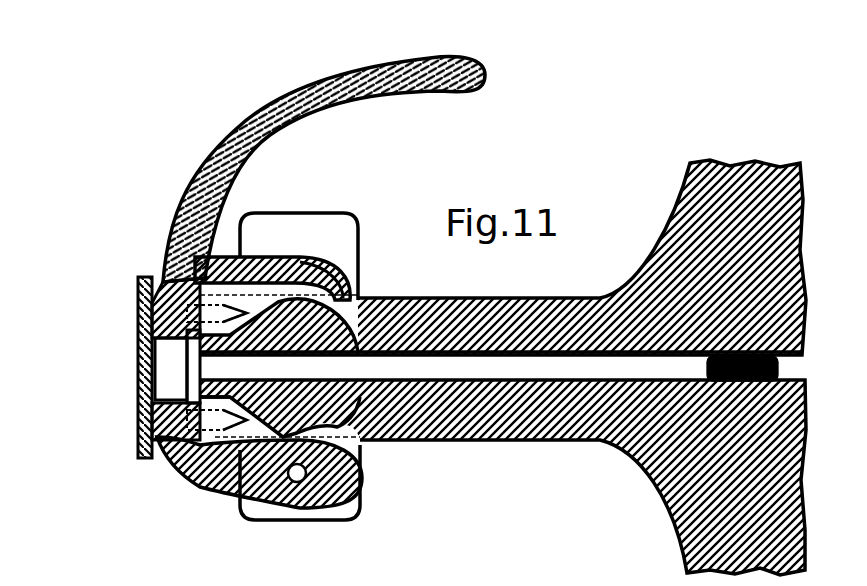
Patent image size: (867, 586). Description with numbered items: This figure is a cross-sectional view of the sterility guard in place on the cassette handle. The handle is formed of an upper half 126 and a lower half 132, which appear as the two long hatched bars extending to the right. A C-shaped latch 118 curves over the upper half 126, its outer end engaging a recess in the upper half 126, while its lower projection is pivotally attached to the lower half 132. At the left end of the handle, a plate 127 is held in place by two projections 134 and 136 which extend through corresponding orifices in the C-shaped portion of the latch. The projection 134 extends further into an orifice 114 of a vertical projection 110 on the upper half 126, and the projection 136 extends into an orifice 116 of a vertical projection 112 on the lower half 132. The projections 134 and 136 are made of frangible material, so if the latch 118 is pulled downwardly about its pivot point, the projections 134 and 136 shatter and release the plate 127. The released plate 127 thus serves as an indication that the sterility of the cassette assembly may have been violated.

The C-shaped latch 118 is at (292, 88).
The orifice 114 is at (170, 248).
The vertical projection 110 is at (213, 318).
The upper half of the handle 126 is at (430, 298).
The lower half of the cassette handle 132 is at (400, 440).
The projection 134 is at (140, 333).
The plate 127 is at (138, 378).
The projection 136 is at (140, 437).
The orifice 116 is at (196, 470).
The vertical projection 112 is at (200, 470).